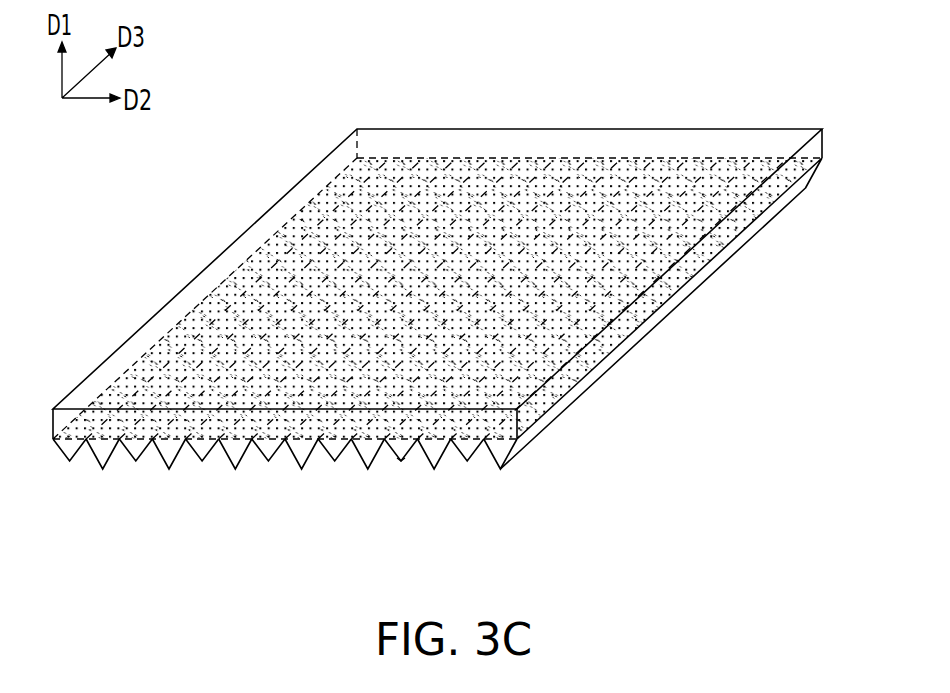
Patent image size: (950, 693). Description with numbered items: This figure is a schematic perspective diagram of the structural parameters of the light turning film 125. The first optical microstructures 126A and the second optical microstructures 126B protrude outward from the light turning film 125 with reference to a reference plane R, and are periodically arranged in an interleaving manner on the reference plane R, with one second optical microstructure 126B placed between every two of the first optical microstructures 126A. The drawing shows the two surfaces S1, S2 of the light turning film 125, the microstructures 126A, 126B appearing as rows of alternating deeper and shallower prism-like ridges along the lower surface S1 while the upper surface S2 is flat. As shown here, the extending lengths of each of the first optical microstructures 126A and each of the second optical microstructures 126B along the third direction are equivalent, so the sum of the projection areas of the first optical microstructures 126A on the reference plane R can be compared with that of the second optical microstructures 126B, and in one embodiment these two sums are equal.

The light turning film 125 is at (446, 300).
The first optical microstructures 126A is at (508, 452).
The second optical microstructures 126B is at (470, 460).
The bottom surface S1 is at (296, 487).
The top surface S2 is at (620, 133).
The reference plane R is at (399, 463).